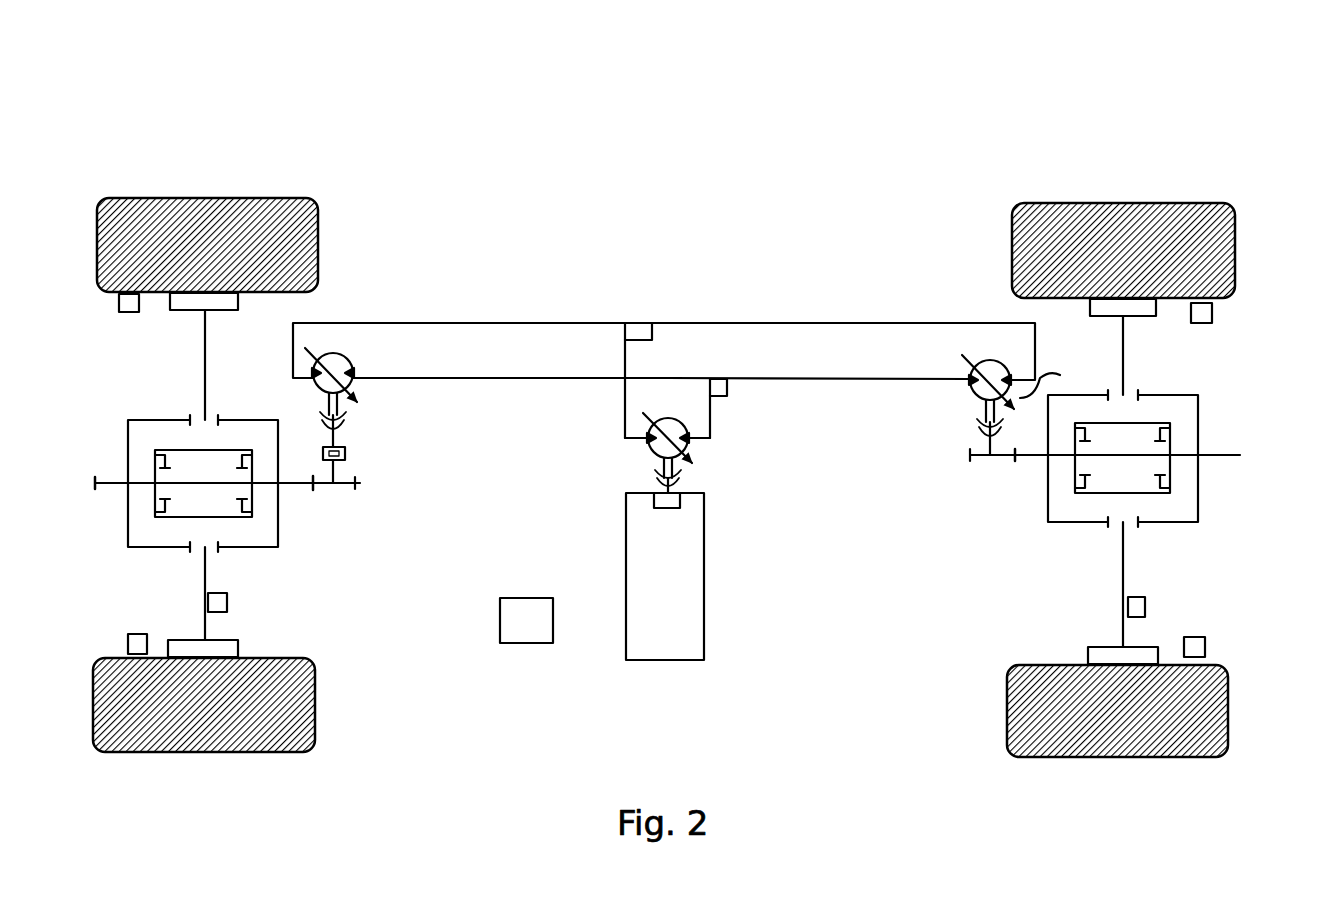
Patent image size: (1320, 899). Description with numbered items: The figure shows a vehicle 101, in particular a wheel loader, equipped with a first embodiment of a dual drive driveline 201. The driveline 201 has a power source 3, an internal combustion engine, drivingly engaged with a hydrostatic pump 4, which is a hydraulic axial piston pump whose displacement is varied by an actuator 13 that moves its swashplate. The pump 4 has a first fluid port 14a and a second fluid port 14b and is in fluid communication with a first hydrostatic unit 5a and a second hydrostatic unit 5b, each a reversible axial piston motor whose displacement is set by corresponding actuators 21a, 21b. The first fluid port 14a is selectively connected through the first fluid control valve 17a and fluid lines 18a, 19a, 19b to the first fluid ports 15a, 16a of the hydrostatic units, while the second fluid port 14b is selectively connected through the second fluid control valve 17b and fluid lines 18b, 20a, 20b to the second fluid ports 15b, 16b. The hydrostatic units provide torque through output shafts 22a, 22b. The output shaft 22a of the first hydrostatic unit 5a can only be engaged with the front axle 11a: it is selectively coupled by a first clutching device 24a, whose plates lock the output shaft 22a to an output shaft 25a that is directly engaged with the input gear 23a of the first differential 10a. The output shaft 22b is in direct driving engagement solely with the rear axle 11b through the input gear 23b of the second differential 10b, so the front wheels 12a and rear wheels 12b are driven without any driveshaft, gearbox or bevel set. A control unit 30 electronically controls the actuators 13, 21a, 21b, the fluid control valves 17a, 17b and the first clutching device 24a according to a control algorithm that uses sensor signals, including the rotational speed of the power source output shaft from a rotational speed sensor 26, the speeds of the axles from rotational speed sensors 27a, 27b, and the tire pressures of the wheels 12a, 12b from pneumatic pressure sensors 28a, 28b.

The vehicle 101 is at (365, 120).
The front wheels 12a is at (130, 200).
The rear wheels 12b is at (1123, 203).
The front axle 11a is at (200, 352).
The rear axle 11b is at (1130, 345).
The first differential 10a is at (178, 550).
The second differential 10b is at (1073, 528).
The pneumatic pressure sensor 28a is at (115, 300).
The pneumatic pressure sensor 28b is at (1214, 312).
The rotational speed sensor 27a is at (230, 603).
The rotational speed sensor 27b is at (1148, 605).
The first fluid port 15a is at (300, 370).
The second fluid port 15b is at (365, 370).
The first fluid port 16a is at (1012, 378).
The second fluid port 16b is at (968, 370).
The actuator 21a is at (364, 412).
The actuator 21b is at (1025, 400).
The output shaft 22a is at (350, 440).
The output shaft 22b is at (995, 465).
The input gear 23a is at (292, 492).
The input gear 23b is at (1013, 480).
The first clutching device 24a is at (367, 478).
The output shaft 25a is at (343, 492).
The first hydrostatic unit 5a is at (428, 418).
The second hydrostatic unit 5b is at (930, 408).
The fluid line 19a is at (487, 323).
The fluid line 19b is at (805, 323).
The fluid line 20a is at (497, 378).
The fluid line 20b is at (820, 378).
The first fluid control valve 17a is at (655, 330).
The second fluid control valve 17b is at (730, 388).
The first fluid port 14a is at (640, 455).
The second fluid port 14b is at (694, 428).
The fluid line 18a is at (622, 413).
The fluid line 18b is at (715, 425).
The actuator 13 is at (692, 465).
The hydrostatic pump 4 is at (745, 462).
The rotational speed sensor 26 is at (670, 508).
The power source 3 is at (703, 655).
The control unit 30 is at (520, 645).
The dual drive driveline 201 is at (885, 592).